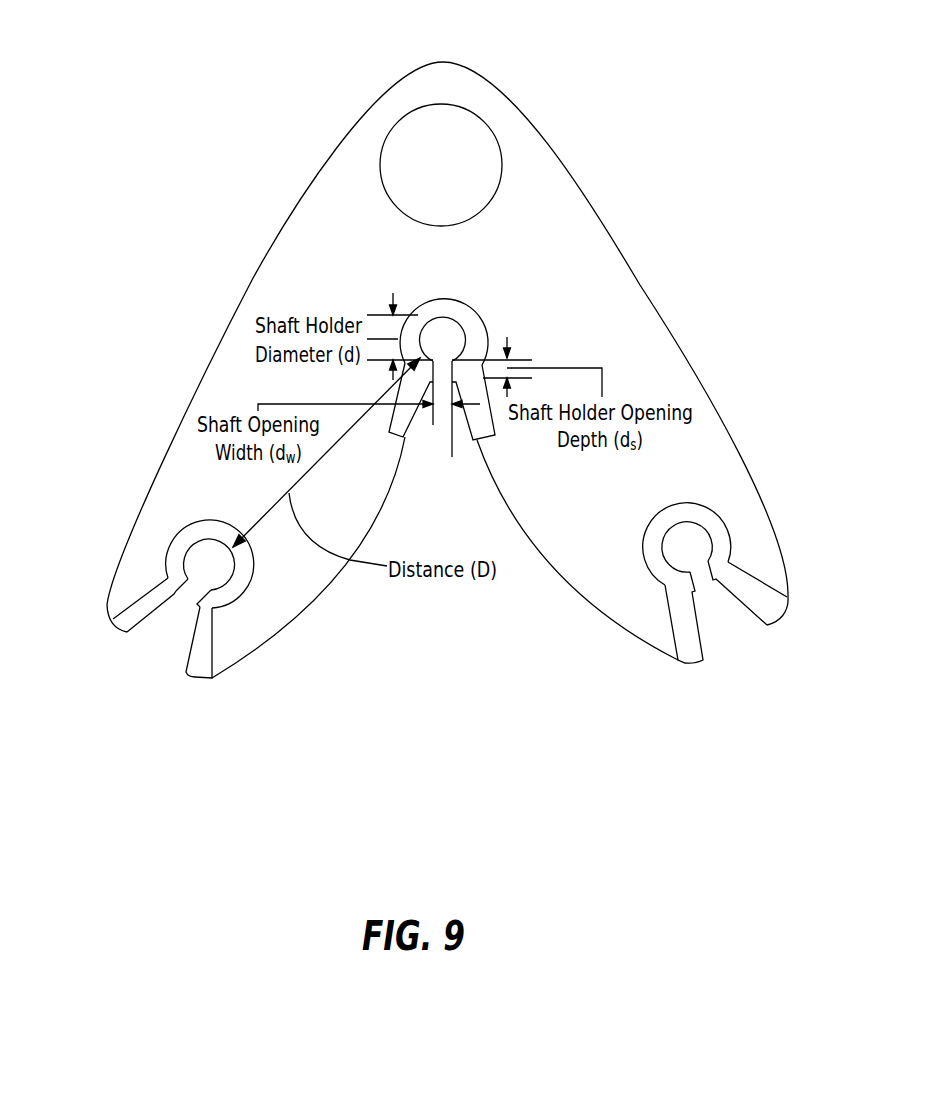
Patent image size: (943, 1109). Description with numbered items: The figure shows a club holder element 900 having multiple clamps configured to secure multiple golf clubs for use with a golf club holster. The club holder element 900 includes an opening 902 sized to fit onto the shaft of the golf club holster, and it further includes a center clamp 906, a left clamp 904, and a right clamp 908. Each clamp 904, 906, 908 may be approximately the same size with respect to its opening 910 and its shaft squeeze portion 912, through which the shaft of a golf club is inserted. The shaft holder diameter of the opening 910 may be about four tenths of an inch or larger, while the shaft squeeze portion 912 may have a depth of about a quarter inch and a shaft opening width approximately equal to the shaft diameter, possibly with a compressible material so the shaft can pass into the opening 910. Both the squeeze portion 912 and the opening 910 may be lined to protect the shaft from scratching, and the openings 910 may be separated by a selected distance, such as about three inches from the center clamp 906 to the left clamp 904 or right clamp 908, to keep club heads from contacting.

The club holder element 900 is at (157, 75).
The opening 902 is at (382, 150).
The left clamp 904 is at (142, 572).
The center clamp 906 is at (432, 603).
The right clamp 908 is at (733, 643).
The opening 910 is at (207, 562).
The shaft squeeze portion 912 is at (185, 587).